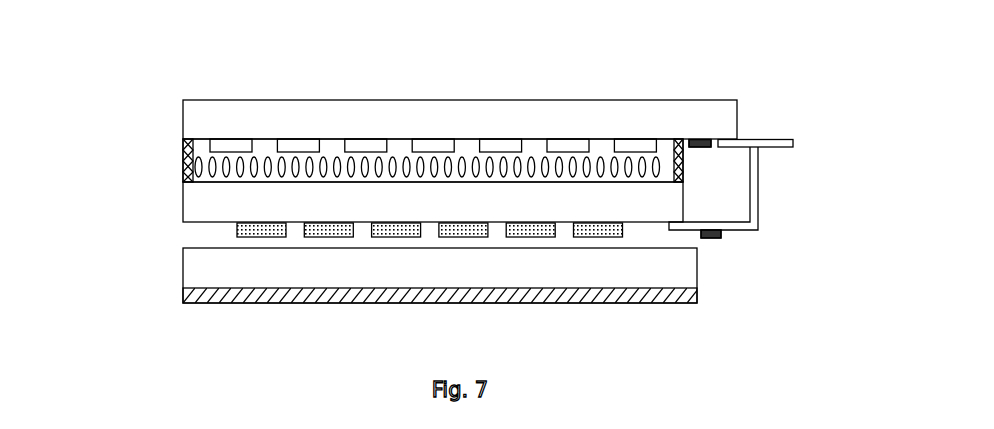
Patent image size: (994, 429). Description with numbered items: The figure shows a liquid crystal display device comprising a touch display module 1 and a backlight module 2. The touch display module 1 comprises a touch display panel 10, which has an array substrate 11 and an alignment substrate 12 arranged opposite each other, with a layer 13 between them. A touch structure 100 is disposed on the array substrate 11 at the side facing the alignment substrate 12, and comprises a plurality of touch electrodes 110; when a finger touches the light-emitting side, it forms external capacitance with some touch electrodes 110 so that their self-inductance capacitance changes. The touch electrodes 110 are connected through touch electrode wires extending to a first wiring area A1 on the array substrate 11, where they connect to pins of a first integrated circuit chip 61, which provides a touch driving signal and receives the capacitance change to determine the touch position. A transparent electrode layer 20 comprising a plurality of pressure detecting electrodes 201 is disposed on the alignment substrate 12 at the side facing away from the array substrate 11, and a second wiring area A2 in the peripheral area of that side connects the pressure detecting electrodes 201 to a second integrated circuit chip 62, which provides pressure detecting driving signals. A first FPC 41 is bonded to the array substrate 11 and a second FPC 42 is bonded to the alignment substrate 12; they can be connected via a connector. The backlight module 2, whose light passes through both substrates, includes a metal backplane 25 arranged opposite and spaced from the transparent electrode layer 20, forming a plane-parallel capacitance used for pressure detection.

The touch display module 1 is at (165, 84).
The touch display panel 10 is at (155, 100).
The array substrate 11 is at (207, 120).
The alignment substrate 12 is at (207, 202).
The liquid crystal layer 13 is at (183, 167).
The touch electrodes 110 is at (223, 145).
The touch structure 100 is at (468, 150).
The first wiring area A1 is at (702, 140).
The second wiring area A2 is at (712, 230).
The first integrated circuit chip 61 is at (707, 148).
The second integrated circuit chip 62 is at (722, 238).
The first FPC 41 is at (777, 139).
The second FPC 42 is at (758, 203).
The pressure detecting electrodes 201 is at (247, 230).
The transparent electrode layer 20 is at (495, 233).
The backlight module 2 is at (697, 273).
The metal backplane 25 is at (682, 300).